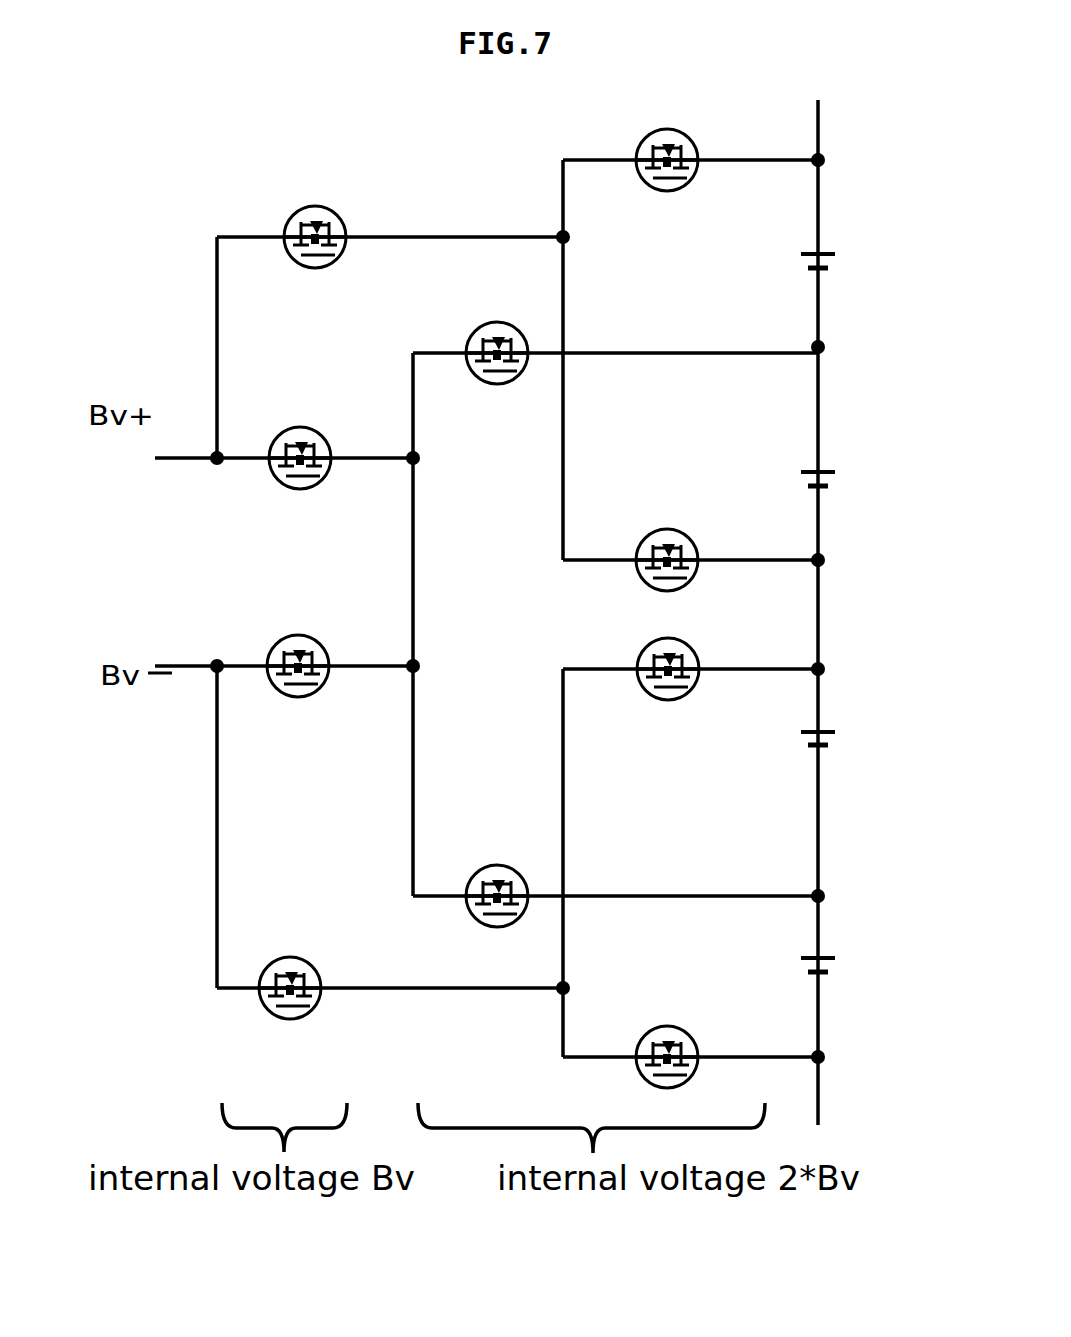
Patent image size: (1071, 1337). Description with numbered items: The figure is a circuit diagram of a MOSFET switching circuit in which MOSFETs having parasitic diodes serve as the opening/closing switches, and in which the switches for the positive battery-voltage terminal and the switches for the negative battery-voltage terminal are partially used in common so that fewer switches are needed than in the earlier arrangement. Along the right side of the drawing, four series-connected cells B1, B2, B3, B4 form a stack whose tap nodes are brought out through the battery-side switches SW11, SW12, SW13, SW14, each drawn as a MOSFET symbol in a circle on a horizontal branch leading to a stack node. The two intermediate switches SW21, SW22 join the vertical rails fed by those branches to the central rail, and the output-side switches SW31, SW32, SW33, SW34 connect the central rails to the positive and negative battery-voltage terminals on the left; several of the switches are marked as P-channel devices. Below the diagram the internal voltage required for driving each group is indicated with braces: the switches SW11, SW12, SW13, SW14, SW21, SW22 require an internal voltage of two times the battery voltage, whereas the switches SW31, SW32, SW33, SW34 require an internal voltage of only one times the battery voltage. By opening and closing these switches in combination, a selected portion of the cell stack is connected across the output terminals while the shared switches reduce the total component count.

The switch SW11 is at (656, 1042).
The switch SW12 is at (711, 676).
The switch SW13 is at (705, 543).
The switch SW14 is at (669, 147).
The switch SW21 is at (485, 879).
The switch SW22 is at (467, 378).
The switch SW31 is at (307, 1009).
The switch SW32 is at (309, 680).
The switch SW33 is at (289, 442).
The switch SW34 is at (297, 231).
The battery cell B1 is at (845, 968).
The battery cell B2 is at (849, 749).
The battery cell B3 is at (842, 487).
The battery cell B4 is at (842, 269).